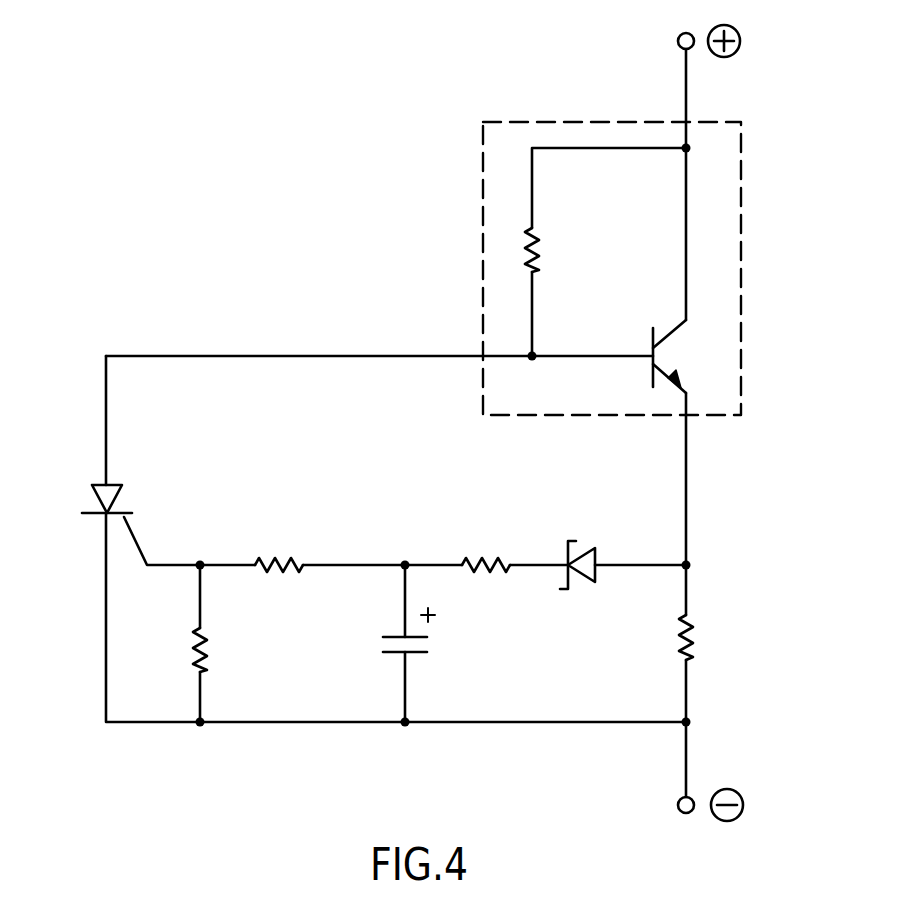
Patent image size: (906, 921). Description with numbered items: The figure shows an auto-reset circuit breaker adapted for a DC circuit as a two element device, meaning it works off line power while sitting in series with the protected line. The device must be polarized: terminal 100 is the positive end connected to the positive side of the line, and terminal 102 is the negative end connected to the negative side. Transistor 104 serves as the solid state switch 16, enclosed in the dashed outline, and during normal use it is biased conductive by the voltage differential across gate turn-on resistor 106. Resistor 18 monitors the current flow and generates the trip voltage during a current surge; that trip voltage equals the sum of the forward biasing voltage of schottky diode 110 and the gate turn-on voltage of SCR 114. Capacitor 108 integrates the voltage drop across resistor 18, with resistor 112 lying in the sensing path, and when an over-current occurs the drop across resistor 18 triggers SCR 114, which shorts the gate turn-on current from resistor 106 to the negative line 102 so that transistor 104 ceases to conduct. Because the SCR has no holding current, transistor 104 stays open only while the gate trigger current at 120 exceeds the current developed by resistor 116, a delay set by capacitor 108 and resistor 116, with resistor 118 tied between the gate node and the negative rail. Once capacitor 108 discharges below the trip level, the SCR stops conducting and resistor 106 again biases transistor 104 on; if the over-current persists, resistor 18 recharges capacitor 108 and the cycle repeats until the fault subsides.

The positive terminal 100 is at (677, 42).
The negative terminal 102 is at (678, 805).
The solid state switch 16 is at (742, 408).
The transistor 104 is at (672, 340).
The gate turn-on resistor 106 is at (527, 240).
The capacitor 108 is at (420, 655).
The schottky diode 110 is at (592, 550).
The resistor 112 is at (472, 558).
The SCR 114 is at (92, 492).
The resistor 116 is at (262, 558).
The resistor 118 is at (205, 667).
The gate trigger current node 120 is at (170, 562).
The resistor 18 is at (693, 620).